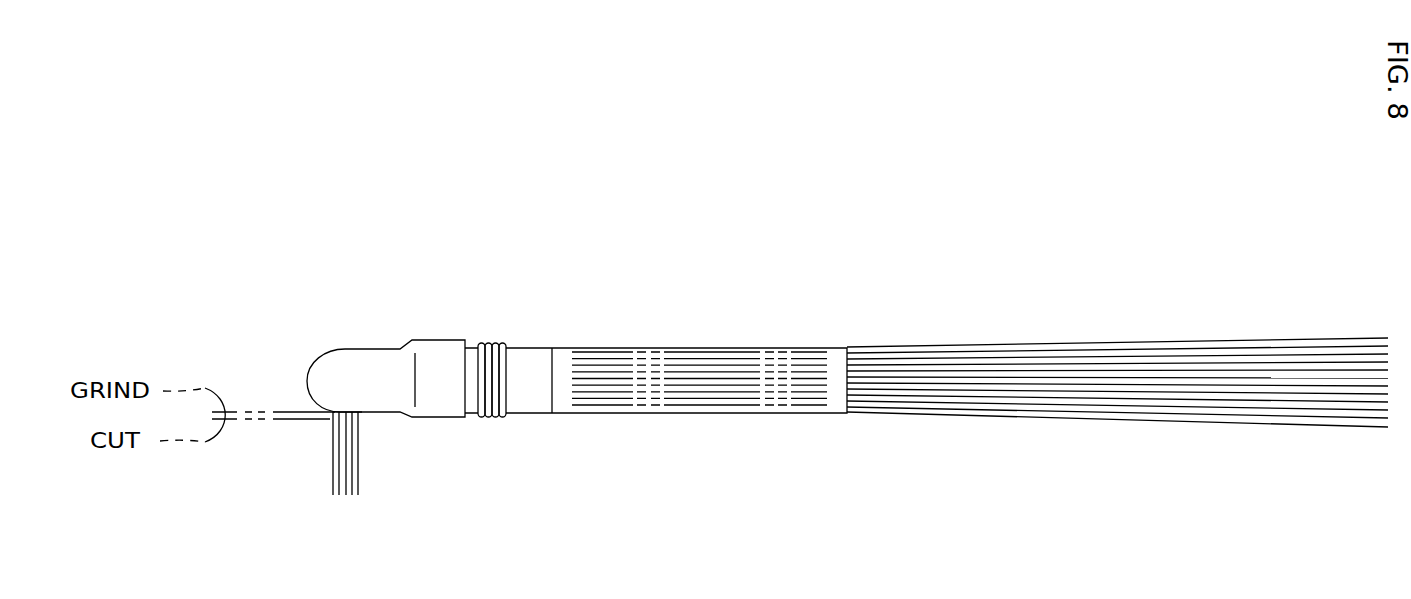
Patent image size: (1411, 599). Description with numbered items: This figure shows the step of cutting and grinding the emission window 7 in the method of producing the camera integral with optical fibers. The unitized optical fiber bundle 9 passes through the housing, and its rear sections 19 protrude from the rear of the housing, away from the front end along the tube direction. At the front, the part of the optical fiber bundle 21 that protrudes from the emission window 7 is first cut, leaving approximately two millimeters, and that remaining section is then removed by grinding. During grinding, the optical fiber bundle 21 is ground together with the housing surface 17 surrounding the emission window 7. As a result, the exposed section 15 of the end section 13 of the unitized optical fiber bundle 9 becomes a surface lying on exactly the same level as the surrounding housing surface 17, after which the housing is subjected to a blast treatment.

The emission window 7 is at (332, 418).
The unitized optical fiber bundle 9 is at (562, 422).
The end section 13 is at (357, 416).
The exposed section 15 is at (361, 418).
The housing surface 17 is at (403, 414).
The rear sections 19 is at (703, 403).
The optical fiber bundle 21 is at (333, 458).